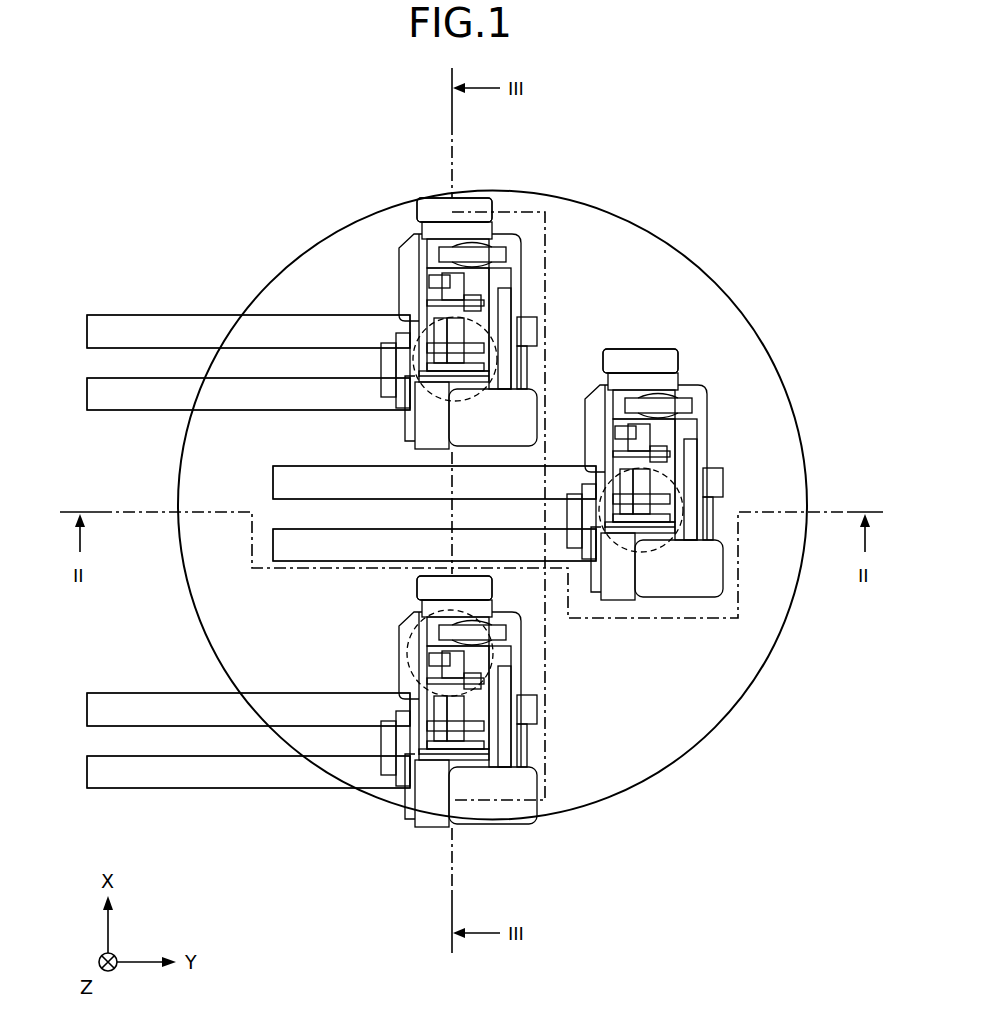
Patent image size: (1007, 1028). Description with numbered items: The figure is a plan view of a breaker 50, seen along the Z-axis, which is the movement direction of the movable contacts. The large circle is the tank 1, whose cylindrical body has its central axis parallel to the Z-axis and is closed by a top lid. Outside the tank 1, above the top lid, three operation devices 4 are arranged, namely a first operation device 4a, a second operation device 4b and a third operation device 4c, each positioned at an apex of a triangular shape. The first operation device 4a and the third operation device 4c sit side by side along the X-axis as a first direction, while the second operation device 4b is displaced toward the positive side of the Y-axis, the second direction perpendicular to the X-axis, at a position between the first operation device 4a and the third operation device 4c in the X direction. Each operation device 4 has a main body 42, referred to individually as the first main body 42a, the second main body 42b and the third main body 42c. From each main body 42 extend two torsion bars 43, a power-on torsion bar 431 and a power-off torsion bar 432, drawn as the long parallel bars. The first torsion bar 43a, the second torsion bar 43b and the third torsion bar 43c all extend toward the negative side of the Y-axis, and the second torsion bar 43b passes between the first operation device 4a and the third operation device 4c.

The tank 1 is at (757, 675).
The operation device 4 is at (448, 516).
The first operation device 4a is at (392, 225).
The second operation device 4b is at (706, 358).
The third operation device 4c is at (374, 822).
The main body 42 is at (547, 399).
The first main body 42a is at (432, 210).
The second main body 42b is at (713, 580).
The third main body 42c is at (430, 827).
The torsion bar 43 is at (341, 551).
The first torsion bar 43a is at (90, 386).
The second torsion bar 43b is at (283, 483).
The third torsion bar 43c is at (125, 705).
The power-on torsion bar 431 is at (341, 583).
The power-off torsion bar 432 is at (341, 520).
The breaker 50 is at (655, 155).